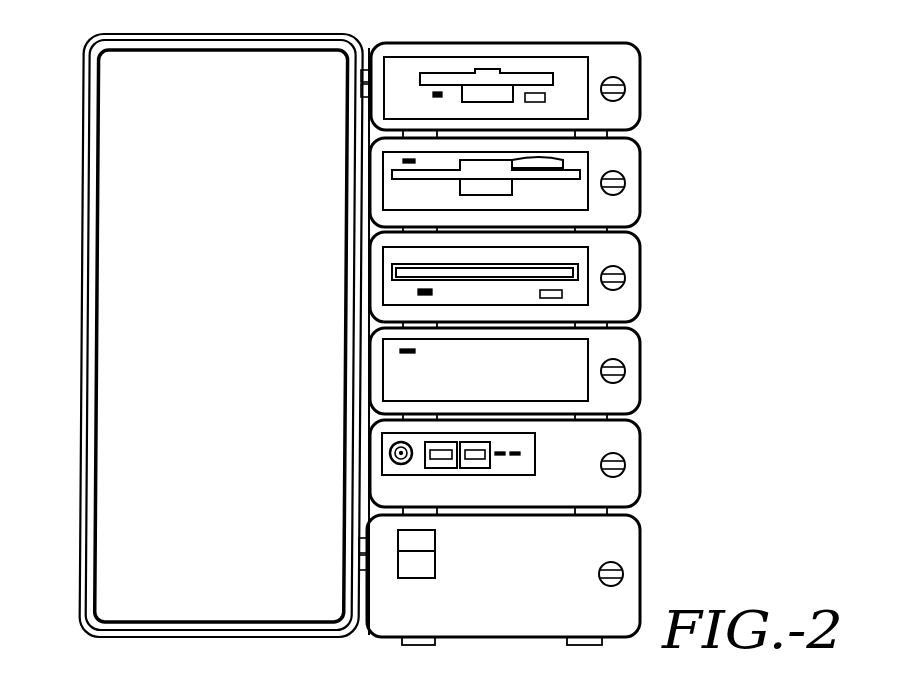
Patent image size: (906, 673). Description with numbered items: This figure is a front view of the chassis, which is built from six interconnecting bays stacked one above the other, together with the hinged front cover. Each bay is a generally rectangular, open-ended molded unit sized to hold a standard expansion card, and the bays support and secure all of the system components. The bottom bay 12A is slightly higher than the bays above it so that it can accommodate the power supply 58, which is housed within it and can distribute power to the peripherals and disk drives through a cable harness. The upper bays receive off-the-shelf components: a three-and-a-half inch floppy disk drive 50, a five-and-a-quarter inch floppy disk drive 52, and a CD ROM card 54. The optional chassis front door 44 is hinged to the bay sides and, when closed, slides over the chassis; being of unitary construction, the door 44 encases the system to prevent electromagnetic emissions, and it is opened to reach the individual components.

The chassis front door 44 is at (80, 553).
The 3½ inch floppy disk drive 50 is at (578, 73).
The 5¼ inch floppy disk drive 52 is at (575, 202).
The CD ROM card 54 is at (575, 298).
The power supply 58 is at (602, 442).
The bottom bay 12A is at (623, 550).